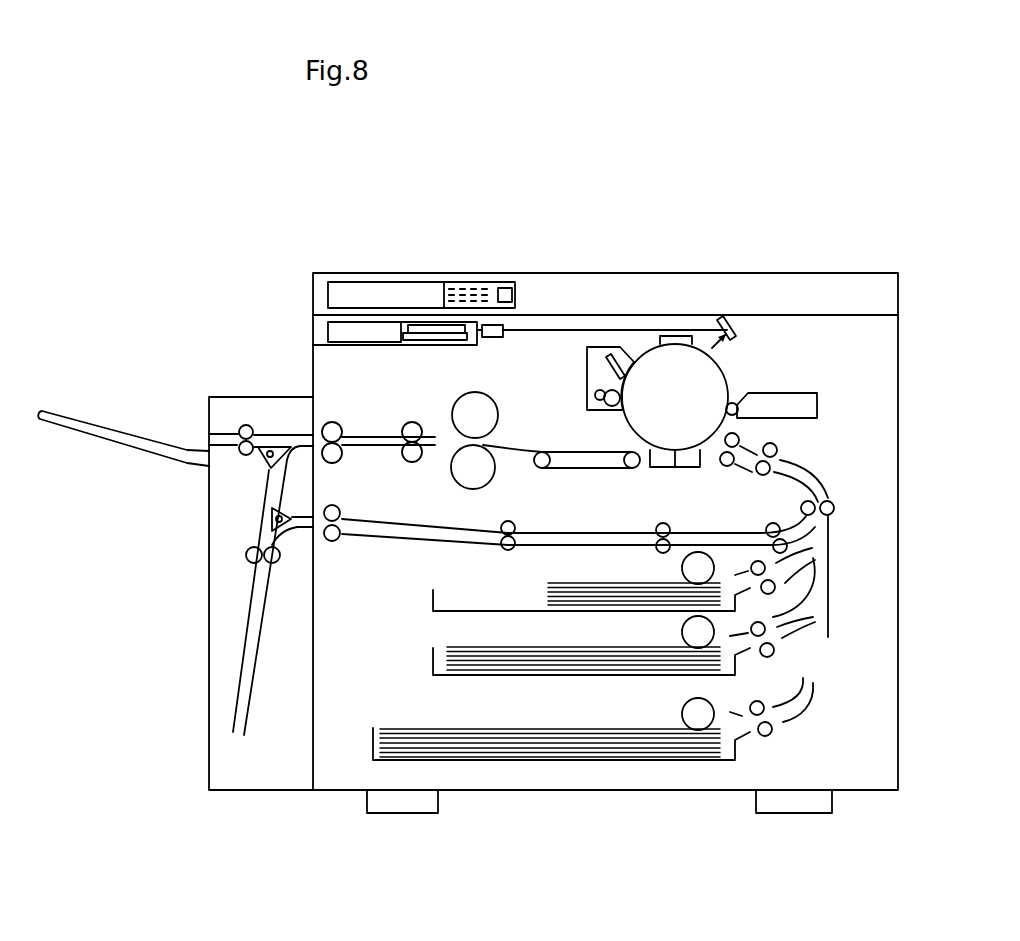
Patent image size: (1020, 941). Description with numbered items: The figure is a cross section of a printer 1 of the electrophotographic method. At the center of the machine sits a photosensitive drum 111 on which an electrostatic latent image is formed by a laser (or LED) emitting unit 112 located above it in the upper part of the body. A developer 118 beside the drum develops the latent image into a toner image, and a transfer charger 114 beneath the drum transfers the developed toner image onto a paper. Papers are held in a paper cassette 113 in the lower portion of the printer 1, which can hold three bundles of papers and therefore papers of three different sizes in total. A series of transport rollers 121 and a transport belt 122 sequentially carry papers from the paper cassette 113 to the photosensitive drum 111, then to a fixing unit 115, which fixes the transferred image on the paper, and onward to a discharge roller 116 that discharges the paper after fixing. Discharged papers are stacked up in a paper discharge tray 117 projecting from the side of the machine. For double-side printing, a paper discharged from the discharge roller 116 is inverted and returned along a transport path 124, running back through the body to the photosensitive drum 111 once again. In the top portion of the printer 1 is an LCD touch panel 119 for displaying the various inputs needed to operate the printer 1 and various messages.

The printer 1 is at (375, 212).
The photosensitive drum 111 is at (750, 373).
The laser (or LED) emitting unit 112 is at (435, 340).
The paper cassette 113 is at (401, 727).
The transfer charger 114 is at (665, 468).
The fixing unit 115 is at (510, 413).
The discharge roller 116 is at (345, 411).
The paper discharge tray 117 is at (110, 432).
The developer 118 is at (791, 406).
The LCD touch panel 119 is at (473, 281).
The transport roller 121 is at (413, 430).
The transport belt 122 is at (585, 467).
The transport path 124 is at (403, 549).